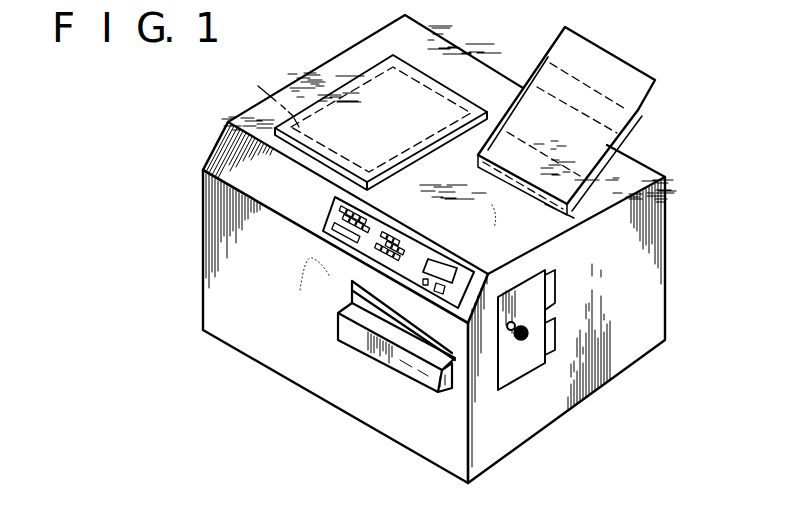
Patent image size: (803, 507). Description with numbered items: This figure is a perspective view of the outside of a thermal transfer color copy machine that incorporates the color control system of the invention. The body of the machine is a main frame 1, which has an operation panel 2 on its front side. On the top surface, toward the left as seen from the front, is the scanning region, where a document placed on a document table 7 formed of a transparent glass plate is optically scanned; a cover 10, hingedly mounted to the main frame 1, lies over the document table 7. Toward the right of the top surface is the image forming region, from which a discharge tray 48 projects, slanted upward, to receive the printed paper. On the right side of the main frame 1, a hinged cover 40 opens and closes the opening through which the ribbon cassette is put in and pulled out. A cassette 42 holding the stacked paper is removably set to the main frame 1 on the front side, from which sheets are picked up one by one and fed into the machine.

The main frame 1 is at (635, 357).
The operation panel 2 is at (335, 214).
The document table 7 is at (270, 98).
The cover 10 is at (357, 85).
The cover 40 is at (528, 367).
The cassette 42 is at (390, 363).
The discharge tray 48 is at (617, 68).